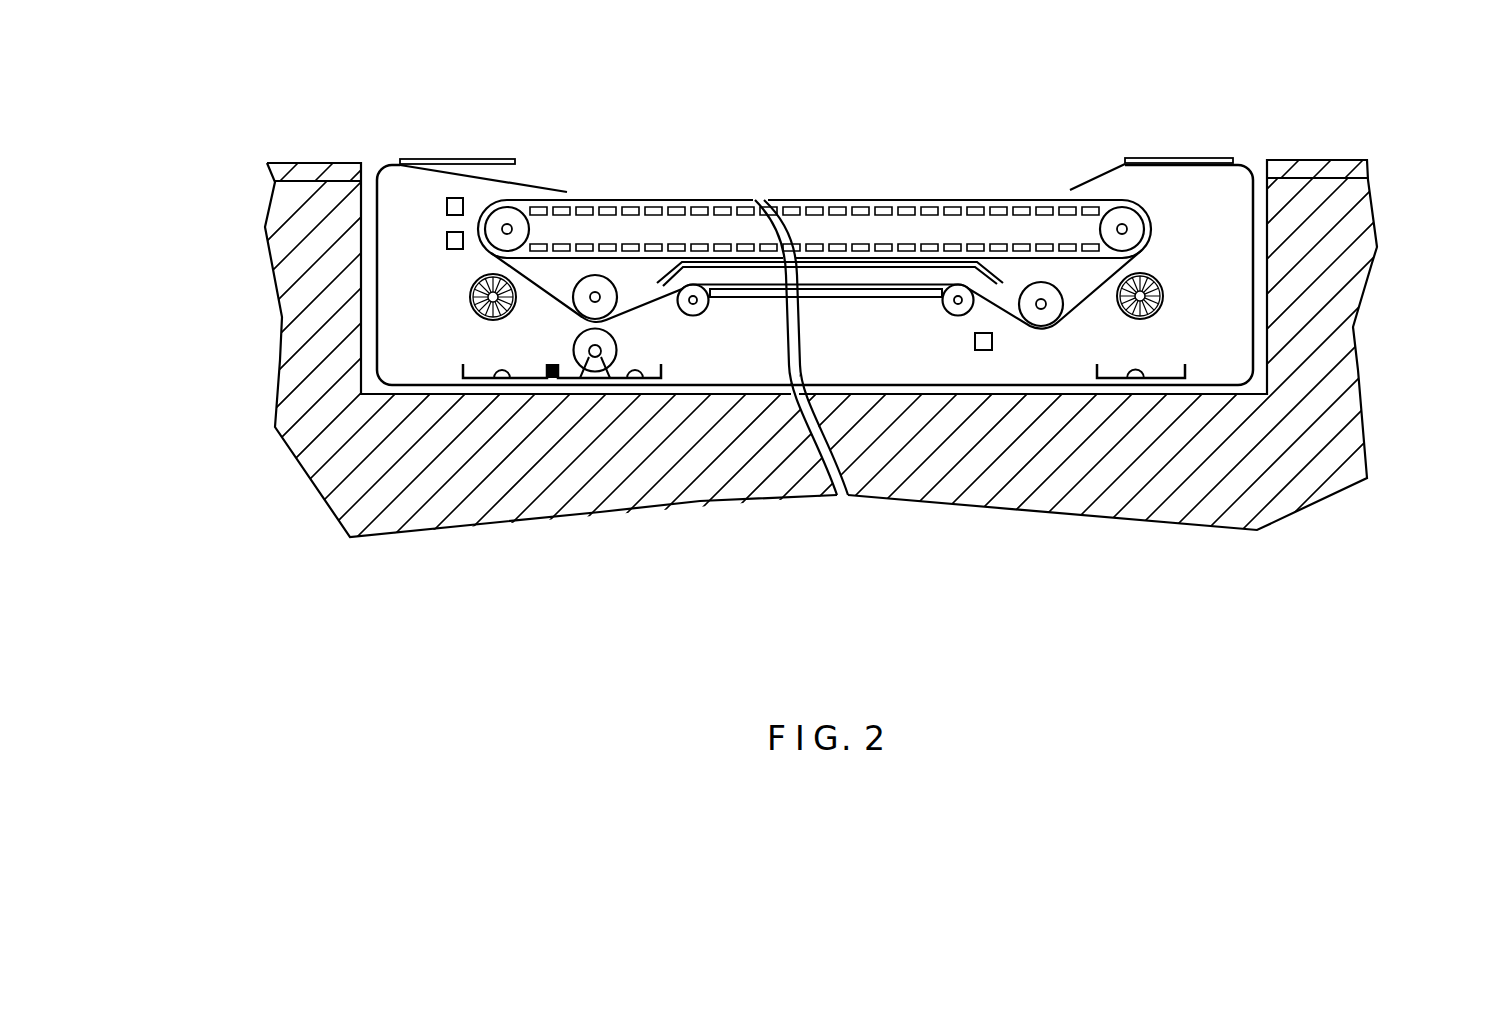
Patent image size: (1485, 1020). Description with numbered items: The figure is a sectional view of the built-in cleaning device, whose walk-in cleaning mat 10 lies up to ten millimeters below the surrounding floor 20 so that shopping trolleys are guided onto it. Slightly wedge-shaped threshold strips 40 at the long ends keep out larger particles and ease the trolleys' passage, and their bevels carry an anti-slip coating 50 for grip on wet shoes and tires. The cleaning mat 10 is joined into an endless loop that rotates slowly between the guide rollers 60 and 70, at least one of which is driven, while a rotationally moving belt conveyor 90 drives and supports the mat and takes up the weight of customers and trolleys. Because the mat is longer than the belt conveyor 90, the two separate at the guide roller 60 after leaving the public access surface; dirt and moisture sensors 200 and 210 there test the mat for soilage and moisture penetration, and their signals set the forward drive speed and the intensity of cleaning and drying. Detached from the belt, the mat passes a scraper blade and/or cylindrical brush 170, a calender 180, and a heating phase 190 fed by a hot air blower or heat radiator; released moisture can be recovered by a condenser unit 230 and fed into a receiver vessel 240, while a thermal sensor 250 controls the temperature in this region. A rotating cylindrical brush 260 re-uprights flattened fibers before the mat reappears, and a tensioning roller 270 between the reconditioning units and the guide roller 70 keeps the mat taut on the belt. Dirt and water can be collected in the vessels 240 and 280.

The cleaning mat 10 is at (789, 200).
The surrounding floor 20 is at (1321, 172).
The threshold strips 40 is at (520, 184).
The anti-slip coating 50 is at (427, 159).
The guide roller 60 is at (507, 229).
The guide roller 70 is at (1124, 228).
The belt conveyor 90 is at (621, 201).
The cylindrical brush 170 is at (473, 297).
The calender 180 is at (581, 355).
The heating phase 190 is at (873, 298).
The dirt and moisture sensor 200 is at (453, 198).
The dirt and moisture sensor 210 is at (453, 240).
The condenser unit 230 is at (851, 260).
The receiver vessel 240 is at (637, 378).
The thermal sensor 250 is at (985, 351).
The rotating cylindrical brush 260 is at (1167, 293).
The tensioning roller 270 is at (1040, 300).
The vessel 280 is at (496, 378).